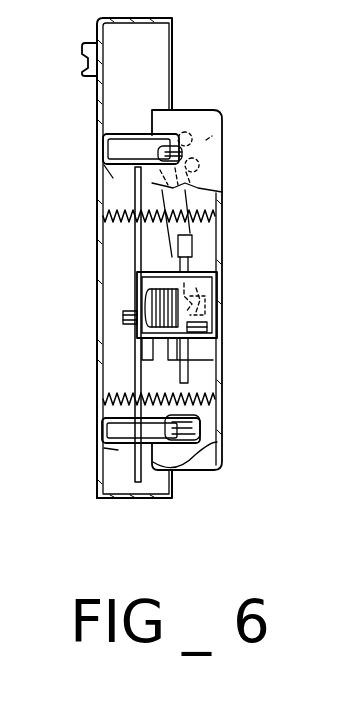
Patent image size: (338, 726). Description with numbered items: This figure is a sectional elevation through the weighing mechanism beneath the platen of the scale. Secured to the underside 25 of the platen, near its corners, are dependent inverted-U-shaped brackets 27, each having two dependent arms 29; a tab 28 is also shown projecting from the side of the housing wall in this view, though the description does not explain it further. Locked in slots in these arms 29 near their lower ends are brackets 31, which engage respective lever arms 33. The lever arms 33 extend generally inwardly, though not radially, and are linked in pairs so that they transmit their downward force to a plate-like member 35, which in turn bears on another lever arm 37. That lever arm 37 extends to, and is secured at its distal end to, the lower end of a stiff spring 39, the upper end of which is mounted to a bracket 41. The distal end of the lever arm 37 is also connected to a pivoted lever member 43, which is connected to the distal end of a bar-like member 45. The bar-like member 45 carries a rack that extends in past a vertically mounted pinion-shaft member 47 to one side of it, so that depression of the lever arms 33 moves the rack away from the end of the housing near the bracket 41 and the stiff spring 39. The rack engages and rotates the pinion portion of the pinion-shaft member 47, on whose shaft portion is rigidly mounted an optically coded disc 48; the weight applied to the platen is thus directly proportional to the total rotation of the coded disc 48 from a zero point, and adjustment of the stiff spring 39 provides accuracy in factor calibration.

The underside of the platen 25 is at (102, 101).
The inverted-U-shaped bracket 27 is at (100, 147).
The mounting tab 28 is at (83, 50).
The dependent arm 29 is at (123, 135).
The bracket 31 is at (225, 130).
The lever arm 33 is at (183, 153).
The plate-like member 35 is at (187, 375).
The lever arm 37 is at (180, 318).
The stiff spring 39 is at (137, 303).
The bracket 41 is at (158, 272).
The pivoted lever member 43 is at (208, 311).
The bar-like member 45 is at (205, 330).
The pinion-shaft member 47 is at (123, 319).
The optically coded disc 48 is at (133, 368).